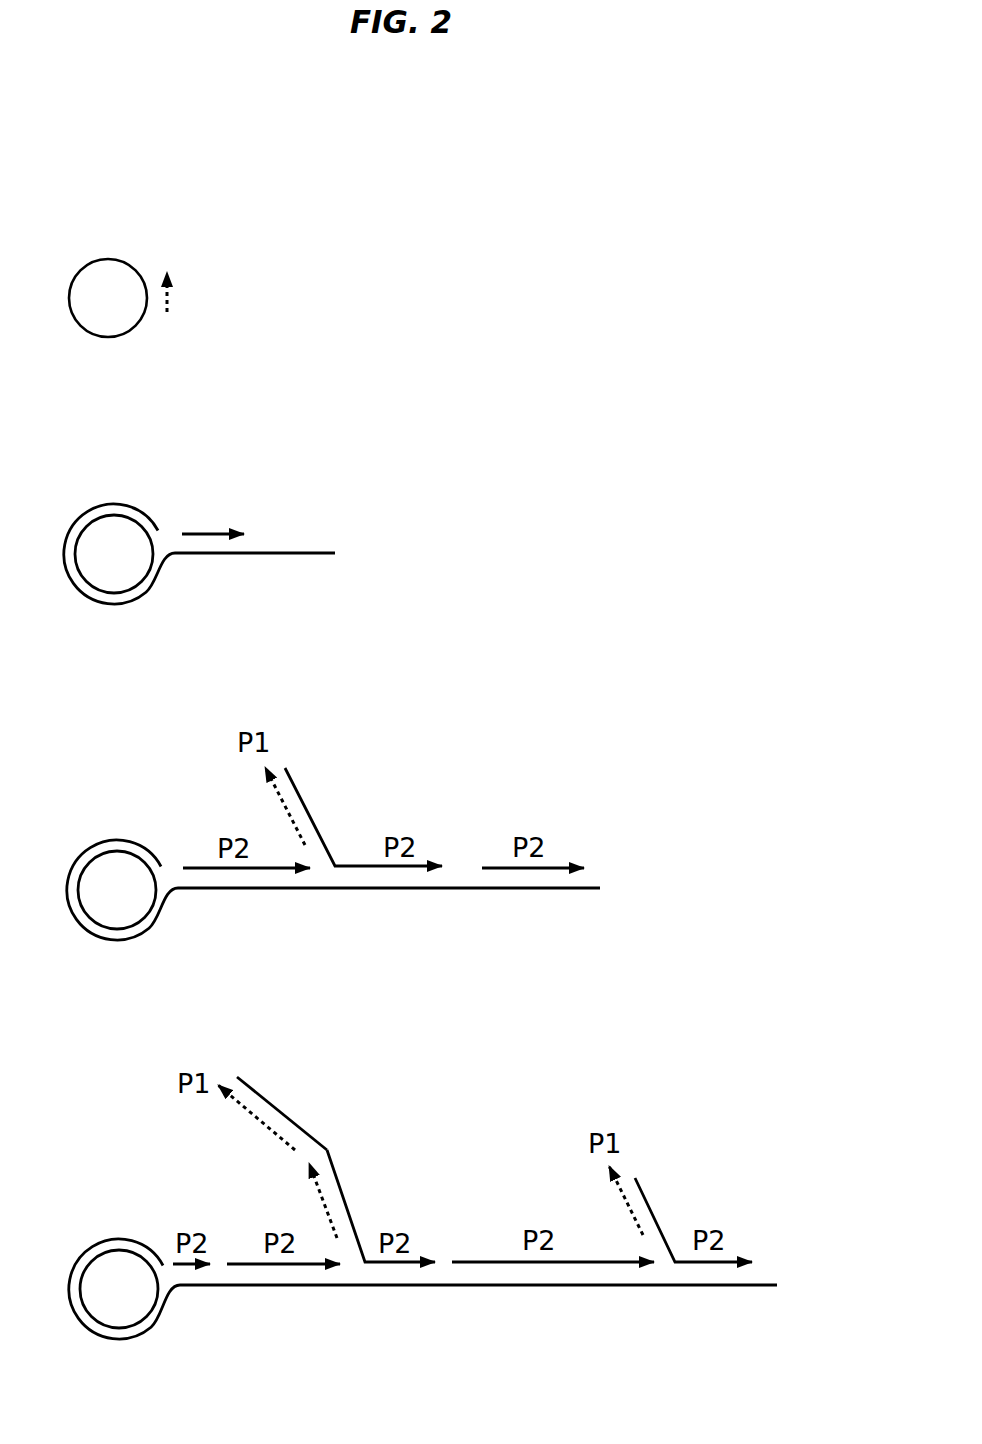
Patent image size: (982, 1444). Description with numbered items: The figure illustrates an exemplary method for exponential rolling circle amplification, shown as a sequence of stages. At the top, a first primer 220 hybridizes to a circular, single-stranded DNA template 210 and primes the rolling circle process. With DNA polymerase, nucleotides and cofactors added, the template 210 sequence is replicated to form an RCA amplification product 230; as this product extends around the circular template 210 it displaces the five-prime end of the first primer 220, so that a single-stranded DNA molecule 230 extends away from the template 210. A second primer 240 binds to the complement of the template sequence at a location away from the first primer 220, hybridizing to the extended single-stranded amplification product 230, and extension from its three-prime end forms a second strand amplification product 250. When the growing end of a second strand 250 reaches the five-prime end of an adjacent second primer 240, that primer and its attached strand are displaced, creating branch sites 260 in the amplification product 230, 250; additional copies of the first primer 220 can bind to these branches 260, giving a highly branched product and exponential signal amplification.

The single stranded circular nucleic acid template 210 is at (108, 298).
The first primer 220 is at (225, 279).
The RCA amplification product 230 is at (345, 553).
The second primer 240 is at (244, 486).
The second strand amplification product 250 is at (353, 890).
The branch sites 260 is at (345, 857).